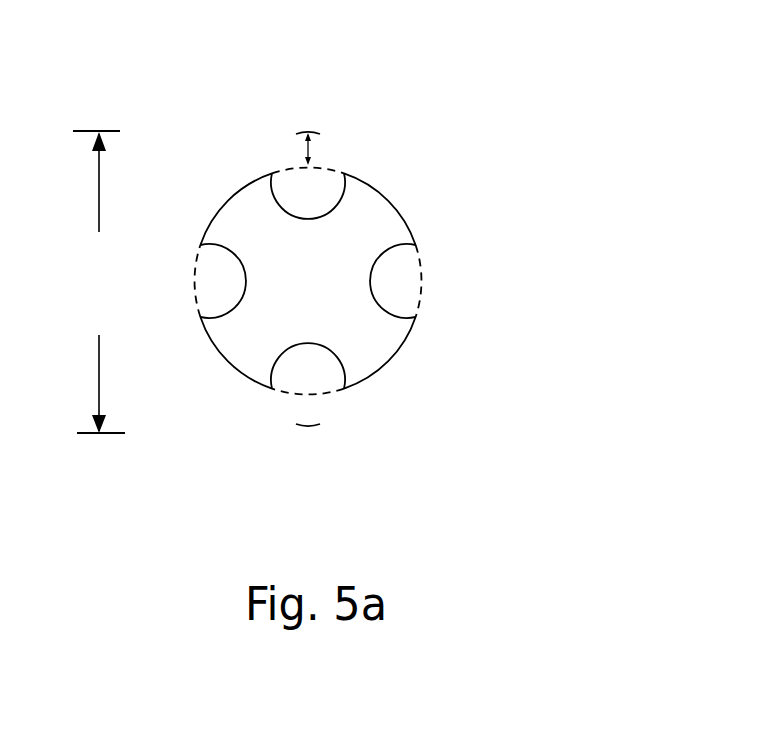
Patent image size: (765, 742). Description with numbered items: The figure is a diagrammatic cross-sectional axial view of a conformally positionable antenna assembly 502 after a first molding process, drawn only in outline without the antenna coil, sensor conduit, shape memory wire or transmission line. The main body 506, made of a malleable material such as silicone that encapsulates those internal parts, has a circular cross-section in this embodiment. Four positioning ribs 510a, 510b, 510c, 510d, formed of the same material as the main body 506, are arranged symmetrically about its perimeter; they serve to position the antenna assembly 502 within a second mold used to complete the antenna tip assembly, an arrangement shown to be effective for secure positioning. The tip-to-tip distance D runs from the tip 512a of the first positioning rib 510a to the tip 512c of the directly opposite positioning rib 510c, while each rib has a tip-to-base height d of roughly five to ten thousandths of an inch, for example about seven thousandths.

The conformally positionable antenna assembly 502 is at (445, 106).
The main body 506 is at (391, 207).
The positioning rib 510a is at (331, 160).
The positioning rib 510b is at (455, 271).
The positioning rib 510c is at (328, 410).
The positioning rib 510d is at (197, 317).
The tip 512a is at (308, 131).
The tip 512c is at (312, 428).